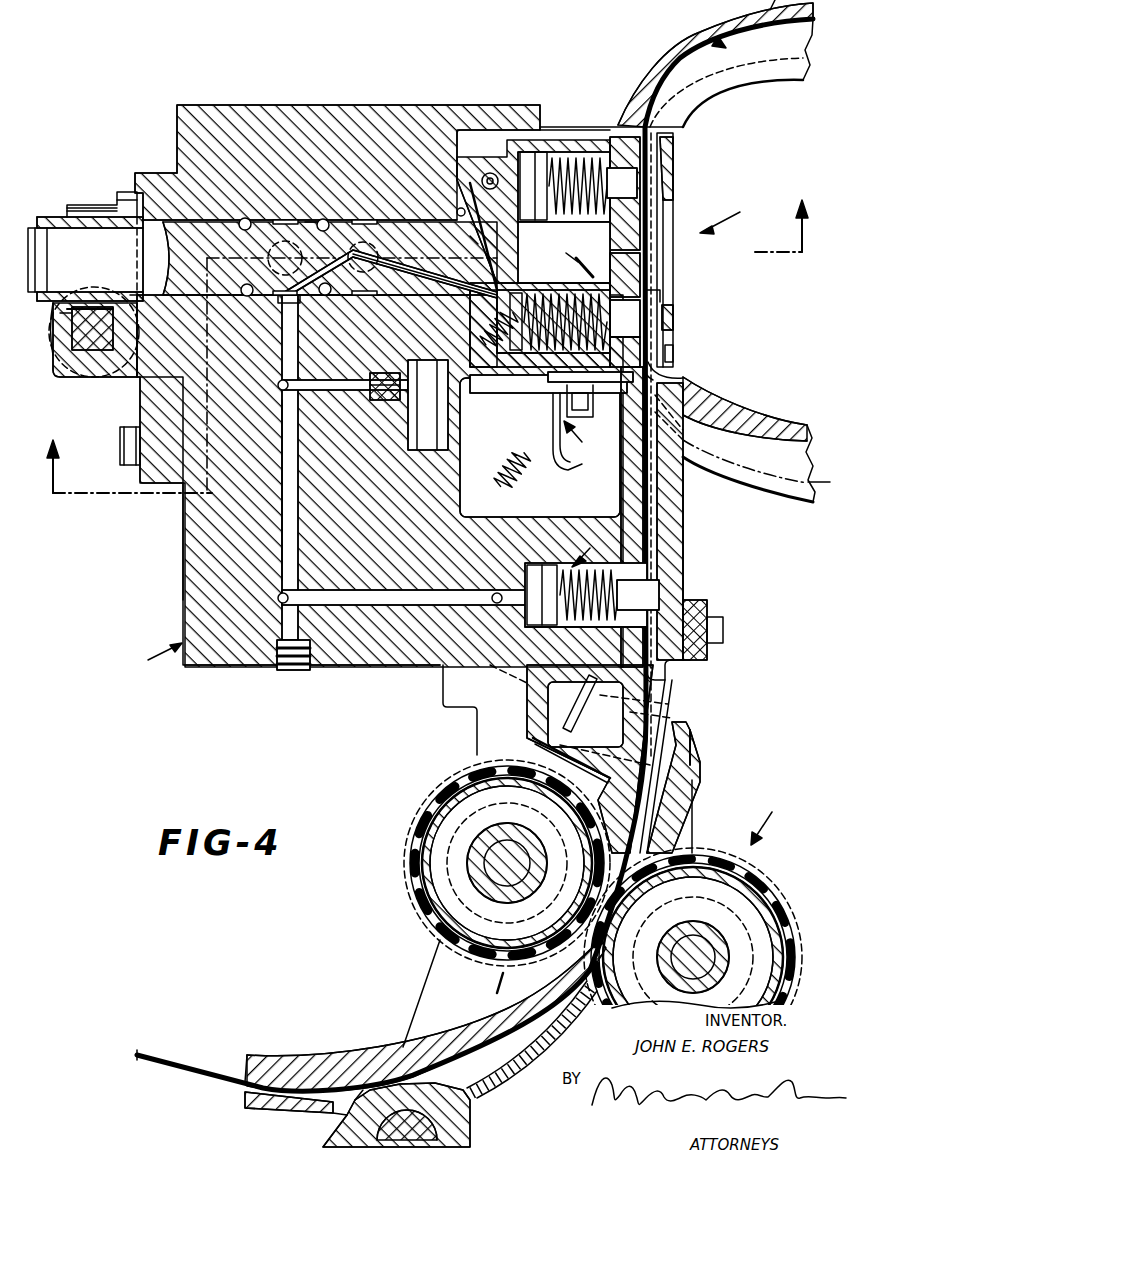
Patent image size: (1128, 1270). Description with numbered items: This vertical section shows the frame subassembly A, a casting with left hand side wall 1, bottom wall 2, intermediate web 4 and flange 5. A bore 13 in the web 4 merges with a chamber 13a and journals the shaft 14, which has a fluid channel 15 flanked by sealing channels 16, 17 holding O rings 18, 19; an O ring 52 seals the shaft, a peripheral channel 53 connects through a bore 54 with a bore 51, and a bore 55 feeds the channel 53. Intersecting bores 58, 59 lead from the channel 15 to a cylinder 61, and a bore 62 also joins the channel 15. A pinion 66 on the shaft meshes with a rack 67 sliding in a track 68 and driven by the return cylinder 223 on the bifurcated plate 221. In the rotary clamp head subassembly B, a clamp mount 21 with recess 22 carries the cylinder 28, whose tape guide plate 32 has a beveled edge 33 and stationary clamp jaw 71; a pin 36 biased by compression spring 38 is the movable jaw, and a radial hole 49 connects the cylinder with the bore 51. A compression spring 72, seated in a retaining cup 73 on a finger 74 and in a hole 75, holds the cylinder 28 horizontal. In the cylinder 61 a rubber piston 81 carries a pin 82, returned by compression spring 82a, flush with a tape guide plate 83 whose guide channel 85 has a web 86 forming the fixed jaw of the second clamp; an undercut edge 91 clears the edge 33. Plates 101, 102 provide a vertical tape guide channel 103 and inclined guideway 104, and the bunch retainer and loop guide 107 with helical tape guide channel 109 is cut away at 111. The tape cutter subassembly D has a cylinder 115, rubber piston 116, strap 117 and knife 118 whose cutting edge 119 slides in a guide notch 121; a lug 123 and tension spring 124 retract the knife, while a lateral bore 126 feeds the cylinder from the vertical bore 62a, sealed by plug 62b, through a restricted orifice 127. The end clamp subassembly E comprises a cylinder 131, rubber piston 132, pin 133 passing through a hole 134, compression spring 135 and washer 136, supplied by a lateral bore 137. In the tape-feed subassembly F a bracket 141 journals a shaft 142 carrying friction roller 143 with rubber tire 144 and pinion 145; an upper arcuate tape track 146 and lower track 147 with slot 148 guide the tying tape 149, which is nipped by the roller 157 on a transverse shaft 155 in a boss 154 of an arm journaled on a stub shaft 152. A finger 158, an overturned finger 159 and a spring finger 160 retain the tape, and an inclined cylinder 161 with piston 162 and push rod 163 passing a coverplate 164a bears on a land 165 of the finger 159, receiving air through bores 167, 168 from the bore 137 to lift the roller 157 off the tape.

The left hand side wall 1 is at (183, 547).
The bottom wall 2 is at (352, 668).
The intermediate upstanding web 4 is at (362, 150).
The flange 5 is at (426, 353).
The bore 13 is at (193, 298).
The recess or chamber 13a is at (468, 160).
The shaft 14 is at (86, 272).
The peripheral fluid channel 15 is at (290, 220).
The sealing channel 16 is at (244, 222).
The sealing channel 17 is at (312, 220).
The O ring 18 is at (288, 220).
The O ring 19 is at (326, 219).
The clamp mount 21 is at (478, 345).
The central recess 22 is at (463, 235).
The cylinder 28 is at (540, 150).
The tape guide plate 32 is at (618, 150).
The beveled forward edge 33 is at (673, 244).
The pin or rod 36 is at (615, 192).
The compression spring 38 is at (566, 152).
The radial hole 49 is at (563, 252).
The bore 51 is at (352, 358).
The O ring 52 is at (467, 205).
The peripheral channel 53 is at (365, 219).
The bore 54 is at (376, 230).
The bore 55 is at (362, 296).
The bore 58 is at (316, 282).
The bore 59 is at (436, 282).
The cylinder 61 is at (537, 290).
The bore 62 is at (280, 300).
The vertical bore 62a is at (282, 470).
The plug 62b is at (296, 672).
The pinion 66 is at (90, 205).
The rack 67 is at (72, 345).
The track 68 is at (70, 380).
The stationary clamp jaw 71 is at (673, 188).
The compression spring 72 is at (553, 290).
The retaining cup 73 is at (584, 262).
The finger 74 is at (566, 253).
The hole 75 is at (495, 320).
The rubber piston 81 is at (515, 358).
The piston rod or pin 82 is at (641, 318).
The compression spring 82a is at (643, 300).
The tape guide plate 83 is at (641, 348).
The tape guide channel 85 is at (672, 352).
The web 86 is at (674, 320).
The undercut edge 91 is at (624, 274).
The plate 101 is at (623, 493).
The second rectangular plate 102 is at (683, 552).
The vertical tape guide channel 103 is at (670, 517).
The inclined notch or tape guideway 104 is at (685, 430).
The cylindrical bunch retainer and loop guide 107 is at (722, 44).
The helical tape guide channel 109 is at (762, 88).
The cut away 111 is at (668, 130).
The cylinder 115 is at (462, 435).
The rubber piston 116 is at (408, 432).
The strap 117 is at (514, 383).
The knife 118 is at (550, 376).
The cutting edge 119 is at (590, 400).
The guide notch 121 is at (682, 380).
The lug 123 is at (548, 432).
The tension spring 124 is at (500, 485).
The lateral bore 126 is at (336, 392).
The restricted flow control orifice 127 is at (390, 372).
The cylinder 131 is at (590, 627).
The rubber piston 132 is at (540, 626).
The pin 133 is at (650, 593).
The hole 134 is at (660, 617).
The compression spring 135 is at (577, 627).
The washer 136 is at (555, 566).
The lateral bore 137 is at (434, 592).
The bracket 141 is at (476, 735).
The shaft 142 is at (514, 838).
The friction roller 143 is at (422, 870).
The flat rubber tire 144 is at (412, 840).
The pinion 145 is at (416, 915).
The arcuate tape track 146 is at (633, 787).
The lower arcuate track 147 is at (370, 1050).
The slot 148 is at (243, 1096).
The tying tape 149 is at (712, 52).
The stub shaft 152 is at (440, 1128).
The boss 154 is at (742, 880).
The transverse shaft 155 is at (688, 935).
The roller 157 is at (760, 893).
The finger 158 is at (520, 1058).
The overturned finger 159 is at (692, 838).
The spring finger 160 is at (680, 680).
The inclined cylinder 161 is at (533, 742).
The piston 162 is at (548, 714).
The push rod or pin 163 is at (672, 718).
The coverplate 164a is at (668, 704).
The land 165 is at (692, 738).
The bore 167 is at (514, 685).
The bore 168 is at (492, 638).
The bifurcated vertical plate 221 is at (160, 175).
The untwisting or return cylinder 223 is at (116, 378).
The frame or base subassembly A is at (155, 653).
The rotary clamp head subassembly B is at (720, 217).
The tape cutter subassembly D is at (580, 444).
The end clamp subassembly E is at (581, 548).
The tape-feed subassembly F is at (762, 818).